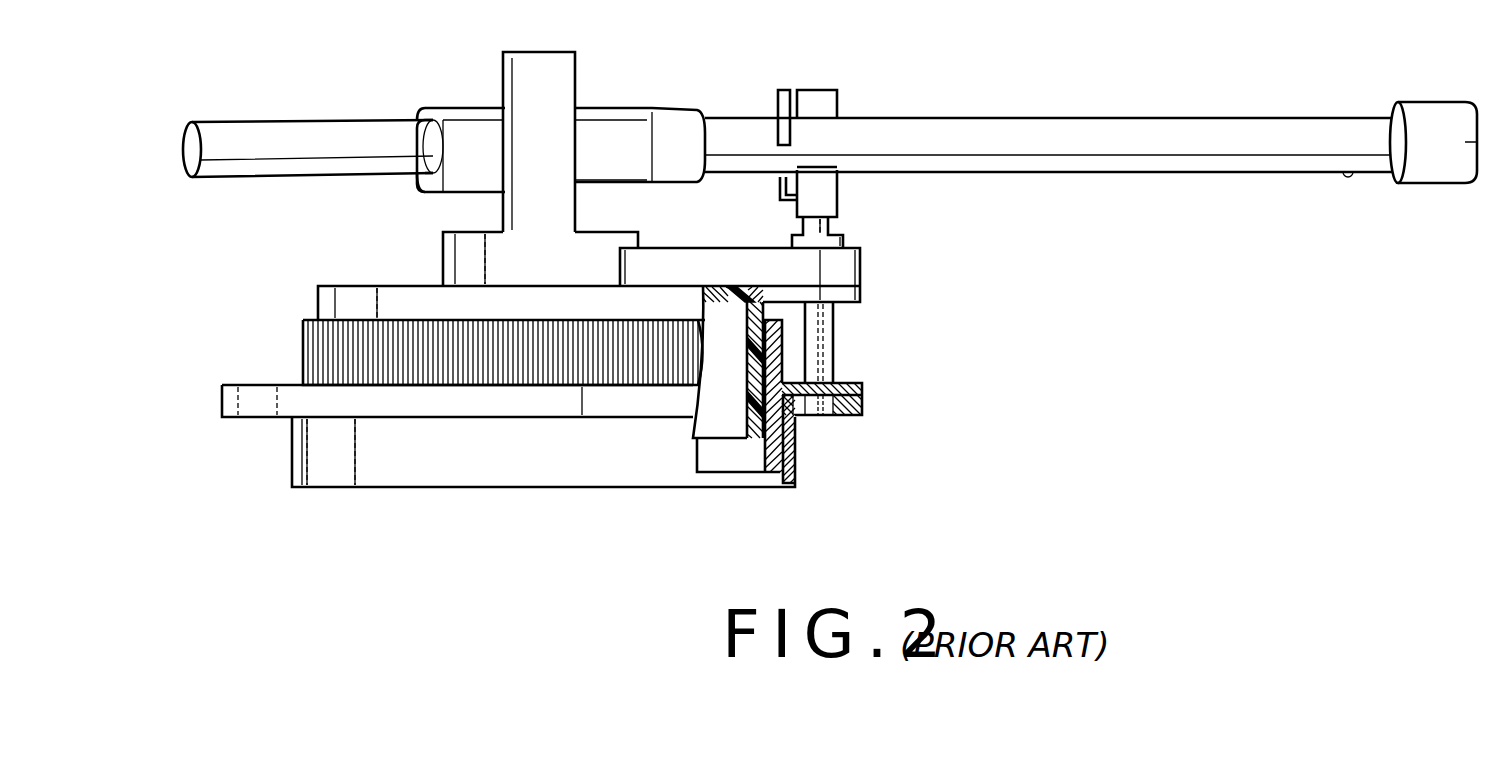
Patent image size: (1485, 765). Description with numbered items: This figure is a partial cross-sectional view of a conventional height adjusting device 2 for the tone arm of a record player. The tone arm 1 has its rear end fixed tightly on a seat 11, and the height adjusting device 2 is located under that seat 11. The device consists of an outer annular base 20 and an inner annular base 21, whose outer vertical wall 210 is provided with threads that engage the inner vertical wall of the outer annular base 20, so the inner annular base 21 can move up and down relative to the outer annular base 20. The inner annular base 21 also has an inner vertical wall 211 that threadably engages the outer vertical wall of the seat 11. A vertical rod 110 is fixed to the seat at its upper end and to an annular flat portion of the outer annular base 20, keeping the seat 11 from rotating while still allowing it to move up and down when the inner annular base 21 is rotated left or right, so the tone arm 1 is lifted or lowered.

The tone arm 1 is at (1027, 135).
The seat 11 is at (335, 302).
The height adjusting device 2 is at (1020, 318).
The outer annular base 20 is at (232, 406).
The inner annular base 21 is at (320, 355).
The vertical rod 110 is at (820, 364).
The outer vertical wall 210 is at (797, 430).
The inner vertical wall 211 is at (763, 427).